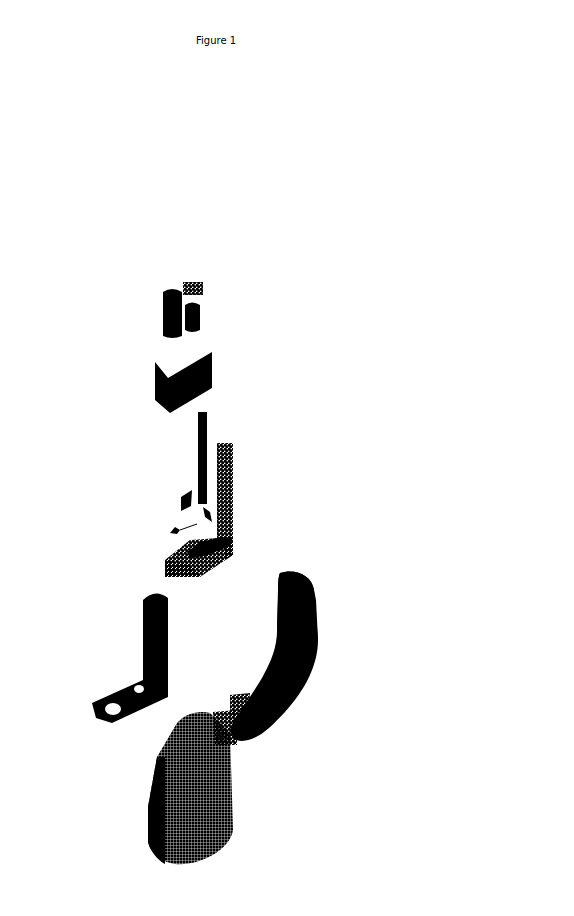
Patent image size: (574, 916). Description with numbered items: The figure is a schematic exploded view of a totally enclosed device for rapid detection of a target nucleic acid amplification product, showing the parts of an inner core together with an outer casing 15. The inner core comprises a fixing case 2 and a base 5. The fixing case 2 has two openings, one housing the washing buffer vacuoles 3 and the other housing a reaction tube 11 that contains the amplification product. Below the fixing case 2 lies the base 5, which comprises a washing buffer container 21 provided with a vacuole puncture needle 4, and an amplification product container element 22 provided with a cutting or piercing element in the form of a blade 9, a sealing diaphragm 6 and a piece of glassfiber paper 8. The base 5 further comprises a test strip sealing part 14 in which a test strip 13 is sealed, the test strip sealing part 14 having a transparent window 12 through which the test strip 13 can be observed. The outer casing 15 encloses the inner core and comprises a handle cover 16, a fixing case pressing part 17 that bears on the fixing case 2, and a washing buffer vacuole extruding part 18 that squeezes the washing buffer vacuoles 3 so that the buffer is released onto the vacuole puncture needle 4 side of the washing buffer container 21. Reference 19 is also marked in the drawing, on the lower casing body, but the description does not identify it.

The fixing case 2 is at (160, 379).
The washing buffer vacuoles 3 is at (165, 309).
The vacuole puncture needle 4 is at (307, 555).
The base 5 is at (177, 576).
The sealing diaphragm 6 is at (307, 555).
The glassfiber paper 8 is at (170, 533).
The blade 9 is at (180, 499).
The reaction tube 11 is at (195, 317).
The transparent window 12 is at (223, 492).
The test strip 13 is at (197, 449).
The test strip sealing part 14 is at (143, 645).
The outer casing 15 is at (148, 812).
The handle cover 16 is at (312, 589).
The fixing case pressing part 17 is at (303, 687).
The washing buffer vacuole extruding part 18 is at (318, 623).
The rounded body 19 is at (225, 785).
The washing buffer container 21 is at (188, 563).
The amplification product container element 22 is at (207, 542).